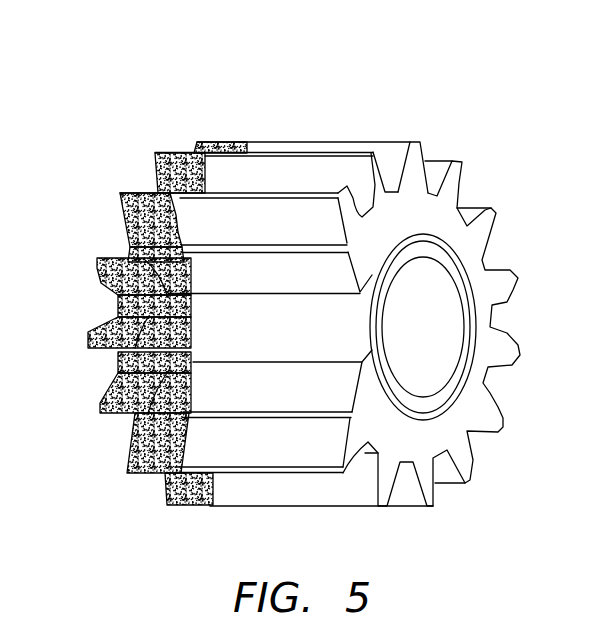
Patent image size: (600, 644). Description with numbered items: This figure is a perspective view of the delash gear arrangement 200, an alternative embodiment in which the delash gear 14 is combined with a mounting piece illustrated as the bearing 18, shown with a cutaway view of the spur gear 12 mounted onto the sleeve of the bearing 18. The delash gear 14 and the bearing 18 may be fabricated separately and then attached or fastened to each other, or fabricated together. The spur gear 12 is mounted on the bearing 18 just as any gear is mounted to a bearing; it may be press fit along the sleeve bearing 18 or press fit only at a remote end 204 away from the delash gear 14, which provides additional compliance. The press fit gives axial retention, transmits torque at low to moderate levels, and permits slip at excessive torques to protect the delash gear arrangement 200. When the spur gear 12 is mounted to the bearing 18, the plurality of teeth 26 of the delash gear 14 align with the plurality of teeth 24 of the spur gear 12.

The delash gear arrangement 200 is at (141, 88).
The first spur gear 12 is at (468, 176).
The teeth 24 is at (395, 141).
The remote end 204 is at (335, 356).
The bearing 18 is at (378, 331).
The delash gear 14 is at (107, 304).
The teeth 26 is at (96, 262).